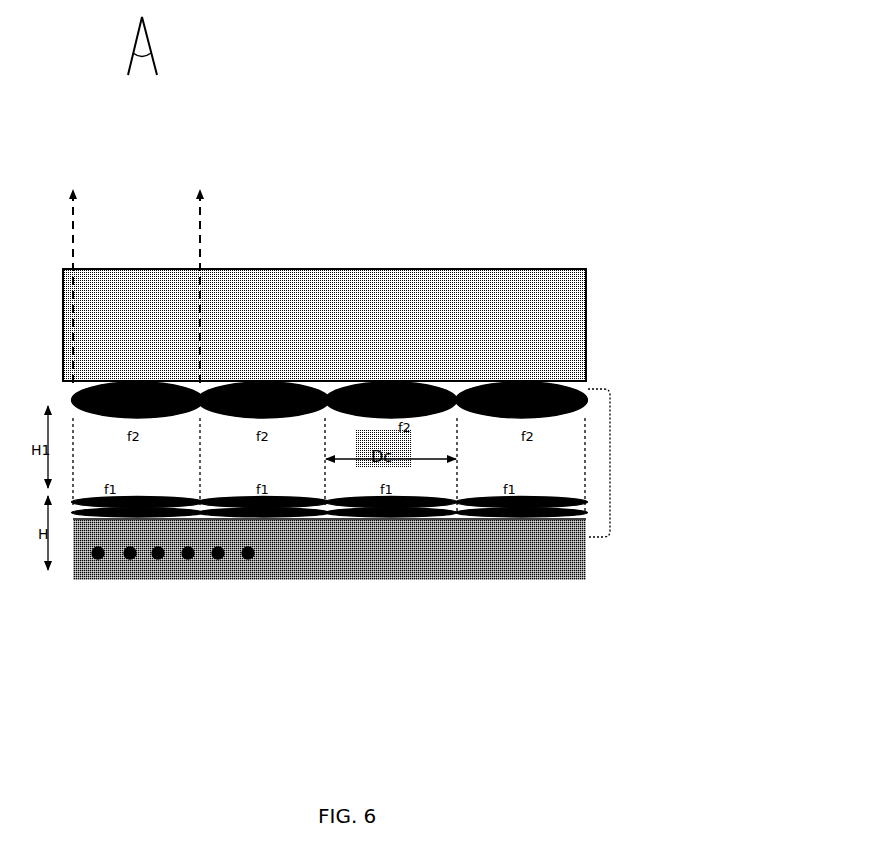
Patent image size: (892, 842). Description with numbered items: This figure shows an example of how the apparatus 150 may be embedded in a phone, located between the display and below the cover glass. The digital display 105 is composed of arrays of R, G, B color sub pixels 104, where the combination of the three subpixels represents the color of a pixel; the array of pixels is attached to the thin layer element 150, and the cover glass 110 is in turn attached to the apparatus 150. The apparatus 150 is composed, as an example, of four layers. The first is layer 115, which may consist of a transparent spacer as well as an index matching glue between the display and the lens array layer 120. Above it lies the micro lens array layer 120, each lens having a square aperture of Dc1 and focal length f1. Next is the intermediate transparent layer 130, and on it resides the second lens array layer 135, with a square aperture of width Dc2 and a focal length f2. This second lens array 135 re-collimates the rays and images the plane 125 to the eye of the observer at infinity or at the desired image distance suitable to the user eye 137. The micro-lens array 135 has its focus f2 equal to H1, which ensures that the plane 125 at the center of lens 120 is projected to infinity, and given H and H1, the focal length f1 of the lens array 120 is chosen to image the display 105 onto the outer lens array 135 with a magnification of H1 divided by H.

The user eye 137 is at (164, 46).
The cover glass 110 is at (324, 325).
The second lens array layer 135 is at (583, 399).
The intermediate transparent layer 130 is at (329, 465).
The micro lens array layer 120 is at (564, 492).
The plane 125 is at (589, 511).
The layer 115 is at (589, 527).
The apparatus 150 is at (610, 460).
The digital display 105 is at (329, 550).
The color sub pixels 104 is at (95, 584).